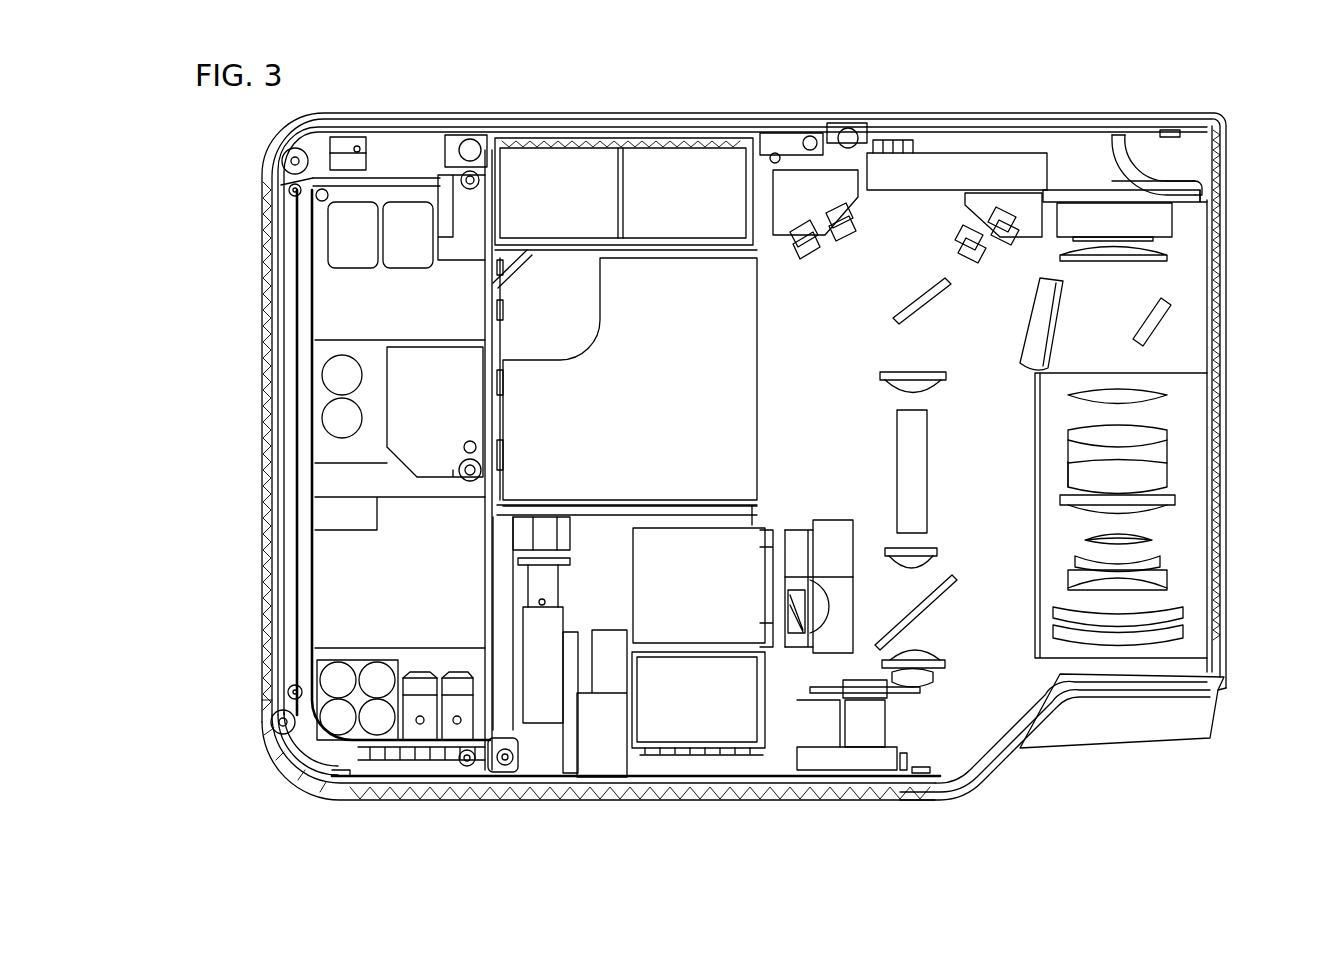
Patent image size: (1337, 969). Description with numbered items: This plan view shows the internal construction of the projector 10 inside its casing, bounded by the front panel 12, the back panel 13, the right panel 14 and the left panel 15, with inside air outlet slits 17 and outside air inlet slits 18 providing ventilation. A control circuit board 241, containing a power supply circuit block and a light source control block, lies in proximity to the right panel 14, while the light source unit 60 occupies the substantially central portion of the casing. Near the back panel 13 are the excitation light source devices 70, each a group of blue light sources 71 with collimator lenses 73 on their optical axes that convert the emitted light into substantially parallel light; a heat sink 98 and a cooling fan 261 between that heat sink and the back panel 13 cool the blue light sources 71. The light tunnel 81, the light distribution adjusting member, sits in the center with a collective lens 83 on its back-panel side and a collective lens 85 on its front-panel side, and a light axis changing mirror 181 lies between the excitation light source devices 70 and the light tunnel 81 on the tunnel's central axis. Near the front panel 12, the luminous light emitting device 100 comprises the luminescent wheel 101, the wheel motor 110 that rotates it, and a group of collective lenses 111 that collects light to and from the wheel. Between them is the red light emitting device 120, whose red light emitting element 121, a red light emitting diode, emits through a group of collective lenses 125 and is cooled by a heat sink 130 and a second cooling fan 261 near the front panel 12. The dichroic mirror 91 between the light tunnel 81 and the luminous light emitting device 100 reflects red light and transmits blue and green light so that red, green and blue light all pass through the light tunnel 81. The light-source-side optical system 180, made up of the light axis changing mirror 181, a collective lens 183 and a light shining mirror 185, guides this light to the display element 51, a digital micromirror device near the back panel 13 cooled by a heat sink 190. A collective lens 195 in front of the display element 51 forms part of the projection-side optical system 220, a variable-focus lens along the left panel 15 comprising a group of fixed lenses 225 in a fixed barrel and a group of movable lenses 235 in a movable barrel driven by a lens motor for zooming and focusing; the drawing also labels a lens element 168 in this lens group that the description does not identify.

The projector 10 is at (1247, 108).
The front panel 12 is at (413, 790).
The back panel 13 is at (610, 126).
The right panel 14 is at (265, 326).
The left panel 15 is at (1227, 612).
The inside air outlet slits 17 is at (265, 365).
The outside air inlet slits 18 is at (568, 116).
The display element 51 is at (1157, 253).
The light source unit 60 is at (1050, 690).
The excitation light source devices 70 is at (827, 160).
The blue light sources 71 is at (830, 215).
The collimator lenses 73 is at (835, 218).
The light tunnel 81 is at (920, 503).
The collective lens 83 is at (950, 375).
The collective lens 85 is at (937, 553).
The dichroic mirror 91 is at (900, 620).
The heat sink 98 is at (657, 340).
The luminous light emitting device 100 is at (858, 740).
The luminescent wheel 101 is at (827, 692).
The wheel motor 110 is at (863, 723).
The group of collective lenses 111 is at (952, 680).
The red light emitting device 120 is at (750, 637).
The red light emitting element 121 is at (775, 607).
The group of collective lenses 125 is at (797, 570).
The heat sink 130 is at (663, 597).
The lens group 168 is at (1185, 450).
The light-source-side optical system 180 is at (1160, 292).
The light axis changing mirror 181 is at (933, 280).
The collective lens 183 is at (1045, 294).
The light shining mirror 185 is at (1153, 327).
The heat sink 190 is at (1080, 160).
The collective lens 195 is at (1170, 275).
The projection-side optical system 220 is at (1185, 477).
The group of fixed lenses 225 is at (1150, 638).
The group of movable lenses 235 is at (1185, 420).
The control circuit board 241 is at (380, 543).
The cooling fan 261 is at (518, 190).